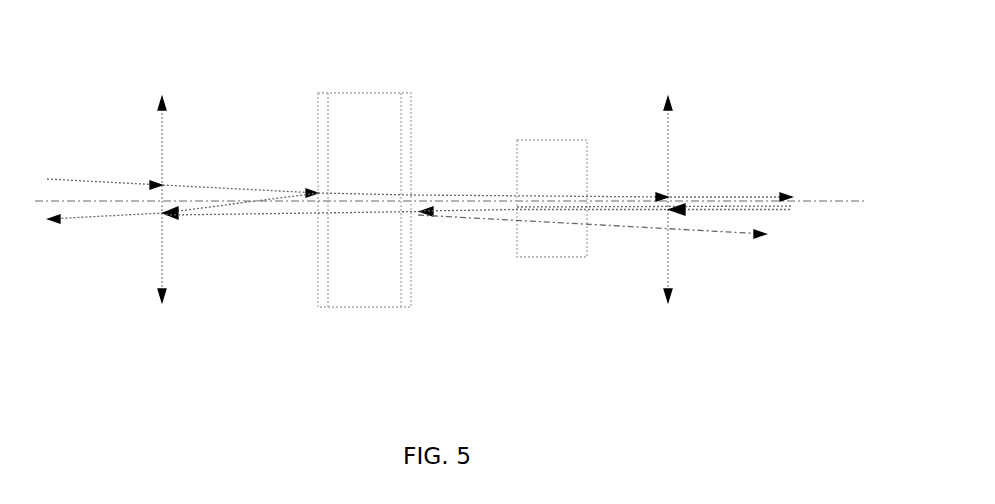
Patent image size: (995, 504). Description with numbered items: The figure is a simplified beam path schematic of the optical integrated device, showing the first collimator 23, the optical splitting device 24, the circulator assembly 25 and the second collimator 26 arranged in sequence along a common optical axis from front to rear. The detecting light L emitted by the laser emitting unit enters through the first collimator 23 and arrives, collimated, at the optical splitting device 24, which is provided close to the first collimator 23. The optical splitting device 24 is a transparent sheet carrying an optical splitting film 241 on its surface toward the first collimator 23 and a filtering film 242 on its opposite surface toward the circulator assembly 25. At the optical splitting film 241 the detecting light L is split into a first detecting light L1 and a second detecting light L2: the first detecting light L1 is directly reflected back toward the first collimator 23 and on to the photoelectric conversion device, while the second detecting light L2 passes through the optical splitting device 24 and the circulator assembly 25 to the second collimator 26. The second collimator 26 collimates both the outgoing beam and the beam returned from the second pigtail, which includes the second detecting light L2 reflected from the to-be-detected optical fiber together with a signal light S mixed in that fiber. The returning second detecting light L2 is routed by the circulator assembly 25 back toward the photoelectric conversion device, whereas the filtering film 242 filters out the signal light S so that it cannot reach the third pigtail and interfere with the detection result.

The first collimator 23 is at (162, 303).
The optical splitting device 24 is at (357, 88).
The optical splitting film 241 is at (322, 307).
The filtering film 242 is at (409, 308).
The circulator assembly 25 is at (557, 258).
The second collimator 26 is at (668, 305).
The detecting light L is at (222, 187).
The first detecting light L1 is at (215, 214).
The second detecting light L2 is at (270, 213).
The signal light S is at (717, 233).